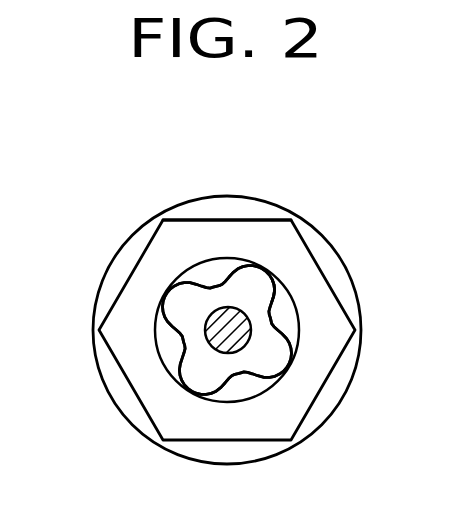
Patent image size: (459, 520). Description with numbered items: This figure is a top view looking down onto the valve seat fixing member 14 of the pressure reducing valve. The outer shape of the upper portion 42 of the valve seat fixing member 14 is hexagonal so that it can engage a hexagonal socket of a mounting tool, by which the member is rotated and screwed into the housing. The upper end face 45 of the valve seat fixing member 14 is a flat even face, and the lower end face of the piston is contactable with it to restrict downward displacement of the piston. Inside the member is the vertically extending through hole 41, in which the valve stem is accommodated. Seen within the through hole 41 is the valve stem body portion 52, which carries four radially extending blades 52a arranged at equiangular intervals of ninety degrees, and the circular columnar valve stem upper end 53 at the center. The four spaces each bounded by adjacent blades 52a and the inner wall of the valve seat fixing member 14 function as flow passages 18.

The valve seat fixing member 14 is at (337, 403).
The flow passages 18 is at (208, 273).
The through hole 41 is at (292, 306).
The upper portion 42 is at (215, 218).
The upper end face 45 is at (270, 223).
The valve stem body portion 52 is at (237, 372).
The blades 52a is at (203, 384).
The valve stem upper end 53 is at (208, 312).